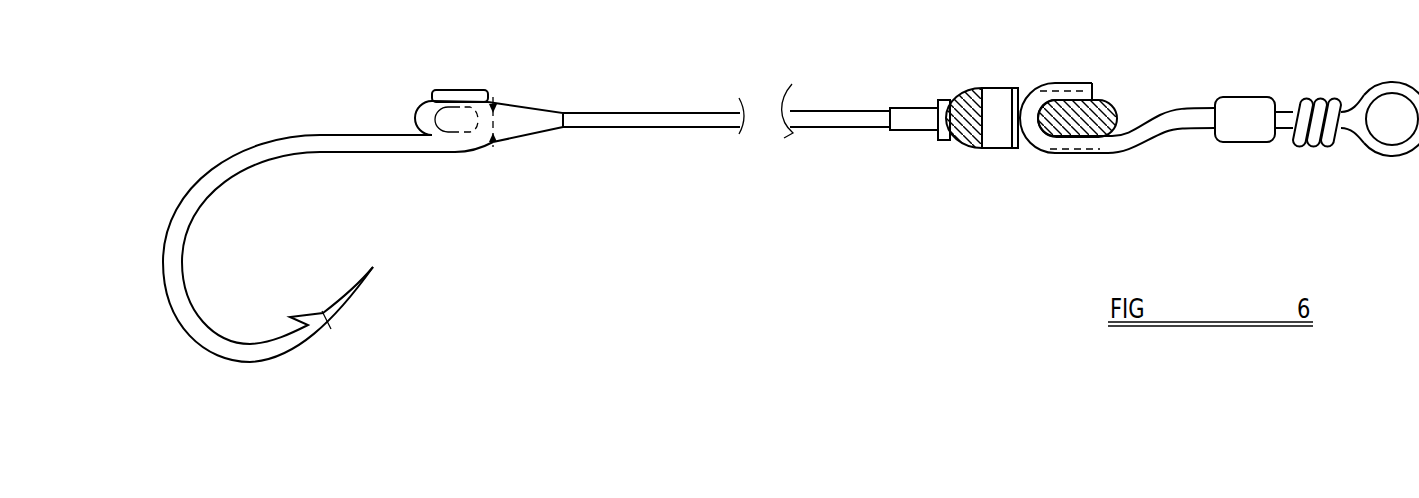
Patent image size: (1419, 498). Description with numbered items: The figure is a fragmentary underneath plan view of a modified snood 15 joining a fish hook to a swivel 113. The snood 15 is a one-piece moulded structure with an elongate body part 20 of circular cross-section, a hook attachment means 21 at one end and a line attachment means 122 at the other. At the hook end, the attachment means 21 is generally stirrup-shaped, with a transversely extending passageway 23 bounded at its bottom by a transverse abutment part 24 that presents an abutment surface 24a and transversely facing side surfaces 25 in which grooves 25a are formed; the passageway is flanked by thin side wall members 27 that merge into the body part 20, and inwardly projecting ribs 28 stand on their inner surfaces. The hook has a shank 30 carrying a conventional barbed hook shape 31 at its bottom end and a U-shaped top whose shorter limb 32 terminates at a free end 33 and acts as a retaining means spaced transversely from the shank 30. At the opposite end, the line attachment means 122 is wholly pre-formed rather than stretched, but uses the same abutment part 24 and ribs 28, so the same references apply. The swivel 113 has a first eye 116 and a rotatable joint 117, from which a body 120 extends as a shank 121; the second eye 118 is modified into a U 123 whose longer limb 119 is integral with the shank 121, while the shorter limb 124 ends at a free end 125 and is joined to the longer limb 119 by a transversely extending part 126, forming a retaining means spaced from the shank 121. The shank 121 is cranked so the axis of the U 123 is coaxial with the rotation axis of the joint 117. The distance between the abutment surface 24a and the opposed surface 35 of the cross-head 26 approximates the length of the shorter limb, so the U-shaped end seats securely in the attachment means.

The snood 15 is at (843, 108).
The body part 20 is at (937, 102).
The hook attachment means 21 is at (531, 140).
The passageway 23 is at (995, 103).
The transverse abutment part 24 is at (1125, 103).
The abutment surface 24a is at (478, 148).
The side surfaces 25 is at (487, 102).
The grooves 25a is at (460, 92).
The cross-head 26 is at (962, 142).
The side wall members 27 is at (530, 98).
The ribs 28 is at (1015, 148).
The shank 30 is at (338, 148).
The barbed hook shape 31 is at (238, 337).
The shorter limb 32 is at (432, 96).
The free end 33 is at (412, 110).
The opposed surface 35 is at (985, 148).
The swivel 113 is at (1268, 90).
The first eye 116 is at (1383, 148).
The rotatable joint 117 is at (1246, 97).
The second eye 118 is at (1075, 84).
The longer limb 119 is at (1103, 153).
The body 120 is at (1170, 146).
The shank 121 is at (1150, 150).
The line attachment means 122 is at (955, 80).
The U 123 is at (1042, 163).
The shorter limb 124 is at (1063, 82).
The free end 125 is at (1103, 82).
The transversely extending part 126 is at (1018, 150).